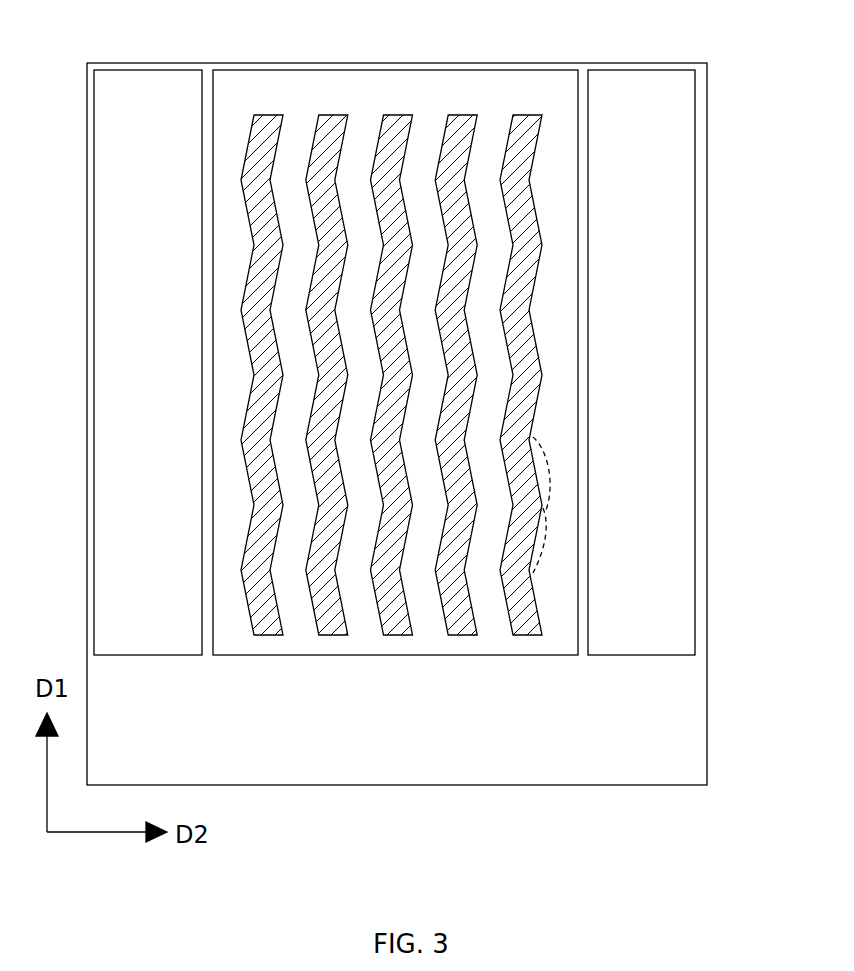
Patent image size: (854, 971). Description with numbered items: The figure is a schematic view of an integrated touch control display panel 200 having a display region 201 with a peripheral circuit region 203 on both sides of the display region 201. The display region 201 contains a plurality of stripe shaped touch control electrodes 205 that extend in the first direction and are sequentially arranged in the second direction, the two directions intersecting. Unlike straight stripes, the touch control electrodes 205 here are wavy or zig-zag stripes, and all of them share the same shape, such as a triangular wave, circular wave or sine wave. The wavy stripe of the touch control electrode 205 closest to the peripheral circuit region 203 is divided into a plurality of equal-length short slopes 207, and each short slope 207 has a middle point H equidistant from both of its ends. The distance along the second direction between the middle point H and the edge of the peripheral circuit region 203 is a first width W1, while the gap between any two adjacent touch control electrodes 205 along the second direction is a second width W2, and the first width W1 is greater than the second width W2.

The integrated touch control display panel 200 is at (124, 27).
The display region 201 is at (538, 310).
The peripheral circuit region 203 is at (660, 200).
The touch control electrode 205 is at (520, 417).
The short slope 207 is at (543, 460).
The middle point H is at (536, 35).
The first width W1 is at (615, 46).
The second width W2 is at (283, 115).